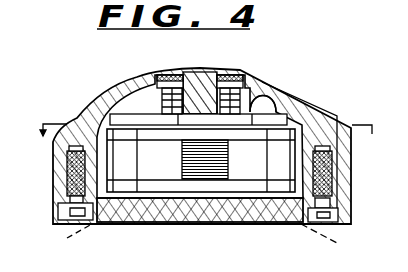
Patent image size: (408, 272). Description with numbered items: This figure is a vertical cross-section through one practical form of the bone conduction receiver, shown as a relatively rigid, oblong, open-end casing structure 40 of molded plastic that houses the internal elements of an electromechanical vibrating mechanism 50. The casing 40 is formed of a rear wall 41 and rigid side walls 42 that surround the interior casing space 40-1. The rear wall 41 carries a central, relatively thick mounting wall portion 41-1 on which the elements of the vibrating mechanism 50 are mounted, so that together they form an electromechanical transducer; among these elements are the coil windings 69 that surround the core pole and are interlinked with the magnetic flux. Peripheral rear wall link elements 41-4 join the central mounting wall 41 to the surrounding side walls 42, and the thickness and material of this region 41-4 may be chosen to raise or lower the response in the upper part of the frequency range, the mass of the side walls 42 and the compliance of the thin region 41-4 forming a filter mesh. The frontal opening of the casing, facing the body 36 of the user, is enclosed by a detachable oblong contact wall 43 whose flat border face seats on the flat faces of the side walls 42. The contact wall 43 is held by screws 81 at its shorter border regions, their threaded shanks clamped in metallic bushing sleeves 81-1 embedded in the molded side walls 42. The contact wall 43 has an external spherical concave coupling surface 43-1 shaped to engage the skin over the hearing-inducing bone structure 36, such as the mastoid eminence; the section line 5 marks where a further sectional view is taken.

The casing structure 40 is at (347, 110).
The interior casing space 40-1 is at (134, 81).
The rear wall 41 is at (203, 72).
The mounting wall portion 41-1 is at (157, 107).
The mounting wall region 41-4 is at (311, 97).
The vibrating mechanism 50 is at (271, 107).
The coil windings 69 is at (228, 160).
The side walls 42 is at (58, 176).
The bushing sleeves 81-1 is at (55, 183).
The screws 81 is at (65, 223).
The contact wall 43 is at (115, 222).
The coupling surface 43-1 is at (183, 222).
The body 36 is at (67, 238).
The section line 5- 5 is at (206, 139).